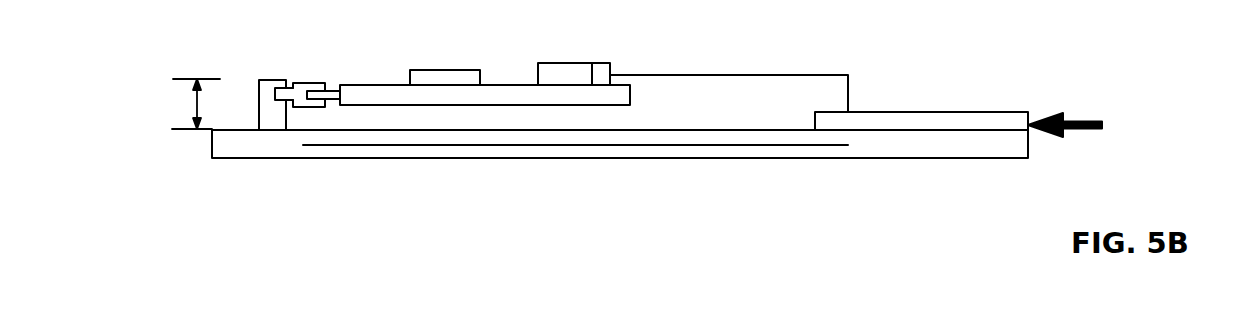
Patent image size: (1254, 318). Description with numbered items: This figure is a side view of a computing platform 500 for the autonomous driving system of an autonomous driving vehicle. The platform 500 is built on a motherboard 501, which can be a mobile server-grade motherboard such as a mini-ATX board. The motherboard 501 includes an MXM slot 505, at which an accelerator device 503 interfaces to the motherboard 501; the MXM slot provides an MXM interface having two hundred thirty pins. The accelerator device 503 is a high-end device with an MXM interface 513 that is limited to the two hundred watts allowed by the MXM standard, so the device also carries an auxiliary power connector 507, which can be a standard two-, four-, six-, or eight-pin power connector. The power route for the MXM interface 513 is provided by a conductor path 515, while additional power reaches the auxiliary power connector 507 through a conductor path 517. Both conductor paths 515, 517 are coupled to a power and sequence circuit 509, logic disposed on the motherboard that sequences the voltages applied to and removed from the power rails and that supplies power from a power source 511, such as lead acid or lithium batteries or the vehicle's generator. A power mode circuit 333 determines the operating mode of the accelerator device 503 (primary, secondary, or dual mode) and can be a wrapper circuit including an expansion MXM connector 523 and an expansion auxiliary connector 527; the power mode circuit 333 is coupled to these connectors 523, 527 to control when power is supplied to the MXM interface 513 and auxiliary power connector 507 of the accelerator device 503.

The computing platform 500 is at (1070, 51).
The motherboard 501 is at (890, 159).
The accelerator device 503 is at (632, 92).
The MXM slot 505 is at (285, 81).
The auxiliary power connector 507 is at (548, 63).
The power and sequence circuit 509 is at (983, 110).
The power source 511 is at (1100, 125).
The MXM interface 513 is at (331, 88).
The conductor path 515 is at (572, 145).
The conductor path 517 is at (848, 75).
The expansion MXM connector 523 is at (303, 81).
The expansion auxiliary connector 527 is at (603, 63).
The power mode circuit 333 is at (455, 70).